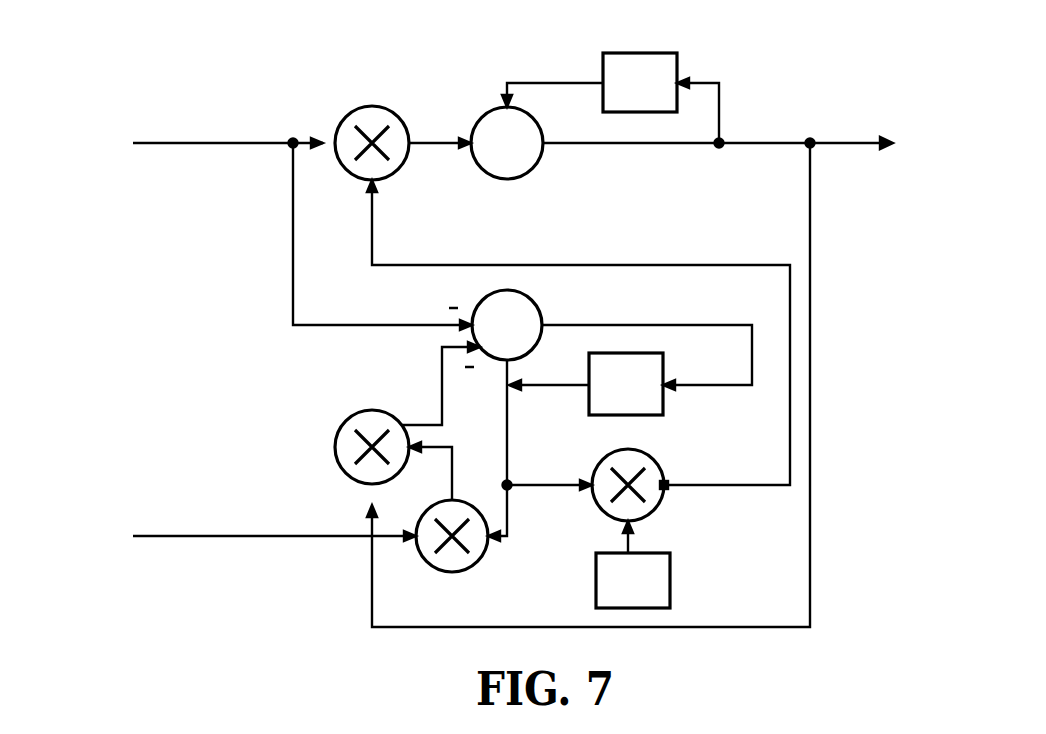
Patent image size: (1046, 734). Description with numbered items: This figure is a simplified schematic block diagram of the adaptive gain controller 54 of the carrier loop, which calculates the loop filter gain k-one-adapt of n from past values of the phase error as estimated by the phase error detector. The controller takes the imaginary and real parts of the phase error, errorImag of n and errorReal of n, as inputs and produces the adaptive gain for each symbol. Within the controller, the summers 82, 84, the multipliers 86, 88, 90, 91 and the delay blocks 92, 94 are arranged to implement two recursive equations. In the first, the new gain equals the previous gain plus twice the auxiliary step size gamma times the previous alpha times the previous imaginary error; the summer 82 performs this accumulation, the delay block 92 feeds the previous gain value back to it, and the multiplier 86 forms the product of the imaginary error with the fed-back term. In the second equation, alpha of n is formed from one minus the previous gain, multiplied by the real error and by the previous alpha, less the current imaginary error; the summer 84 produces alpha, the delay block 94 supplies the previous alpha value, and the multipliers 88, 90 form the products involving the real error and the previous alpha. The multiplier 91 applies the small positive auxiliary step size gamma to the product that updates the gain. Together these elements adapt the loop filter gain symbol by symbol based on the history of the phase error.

The adaptive gain controller 54 is at (748, 75).
The summer 82 is at (487, 110).
The summer 84 is at (486, 293).
The multiplier 86 is at (350, 110).
The multiplier 88 is at (351, 417).
The multiplier 90 is at (463, 503).
The multiplier 91 is at (652, 458).
The delay block 92 is at (622, 53).
The delay block 94 is at (589, 362).